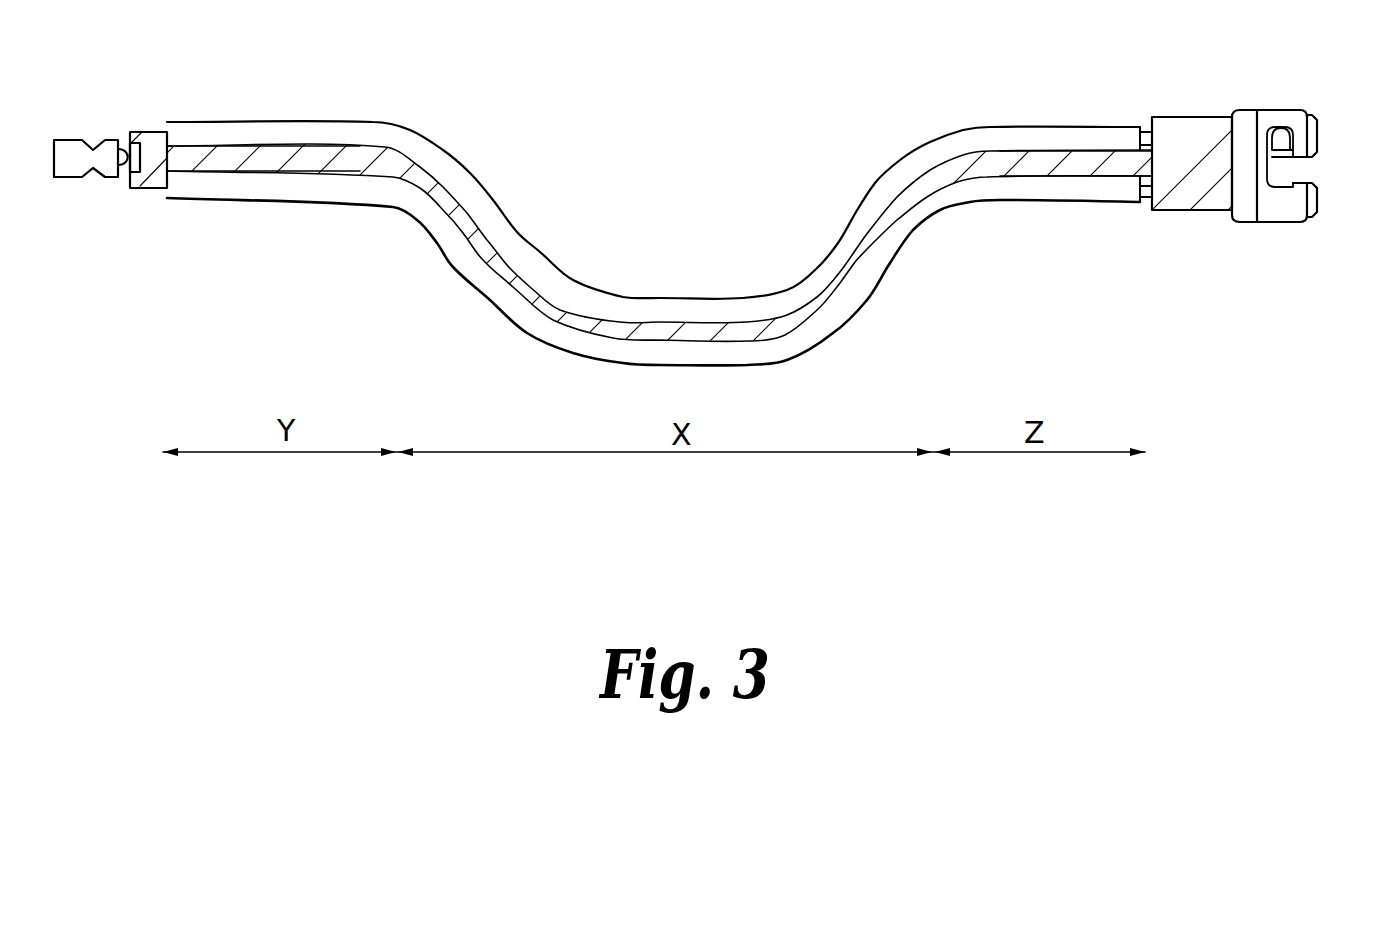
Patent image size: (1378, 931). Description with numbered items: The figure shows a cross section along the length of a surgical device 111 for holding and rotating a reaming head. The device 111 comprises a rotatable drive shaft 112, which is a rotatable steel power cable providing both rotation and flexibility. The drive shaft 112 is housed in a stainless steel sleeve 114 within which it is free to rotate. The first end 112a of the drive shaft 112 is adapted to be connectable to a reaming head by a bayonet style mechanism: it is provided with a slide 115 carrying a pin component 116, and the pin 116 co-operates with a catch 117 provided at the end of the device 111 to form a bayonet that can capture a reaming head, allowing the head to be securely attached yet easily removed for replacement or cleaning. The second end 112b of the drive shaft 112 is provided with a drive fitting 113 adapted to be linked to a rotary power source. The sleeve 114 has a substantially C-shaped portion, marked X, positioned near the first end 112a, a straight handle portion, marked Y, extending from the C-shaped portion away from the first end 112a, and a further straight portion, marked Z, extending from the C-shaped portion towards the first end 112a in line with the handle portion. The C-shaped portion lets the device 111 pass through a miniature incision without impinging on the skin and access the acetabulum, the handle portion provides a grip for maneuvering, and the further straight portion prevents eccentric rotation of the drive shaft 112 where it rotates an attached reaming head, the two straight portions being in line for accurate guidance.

The surgical device 111 is at (671, 146).
The rotatable drive shaft 112 is at (853, 273).
The first end of the drive shaft 112a is at (1112, 162).
The second end of the drive shaft 112b is at (238, 162).
The drive fitting 113 is at (80, 163).
The sleeve 114 is at (410, 130).
The slide 115 is at (1205, 198).
The pin component 116 is at (1292, 152).
The catch 117 is at (1308, 178).